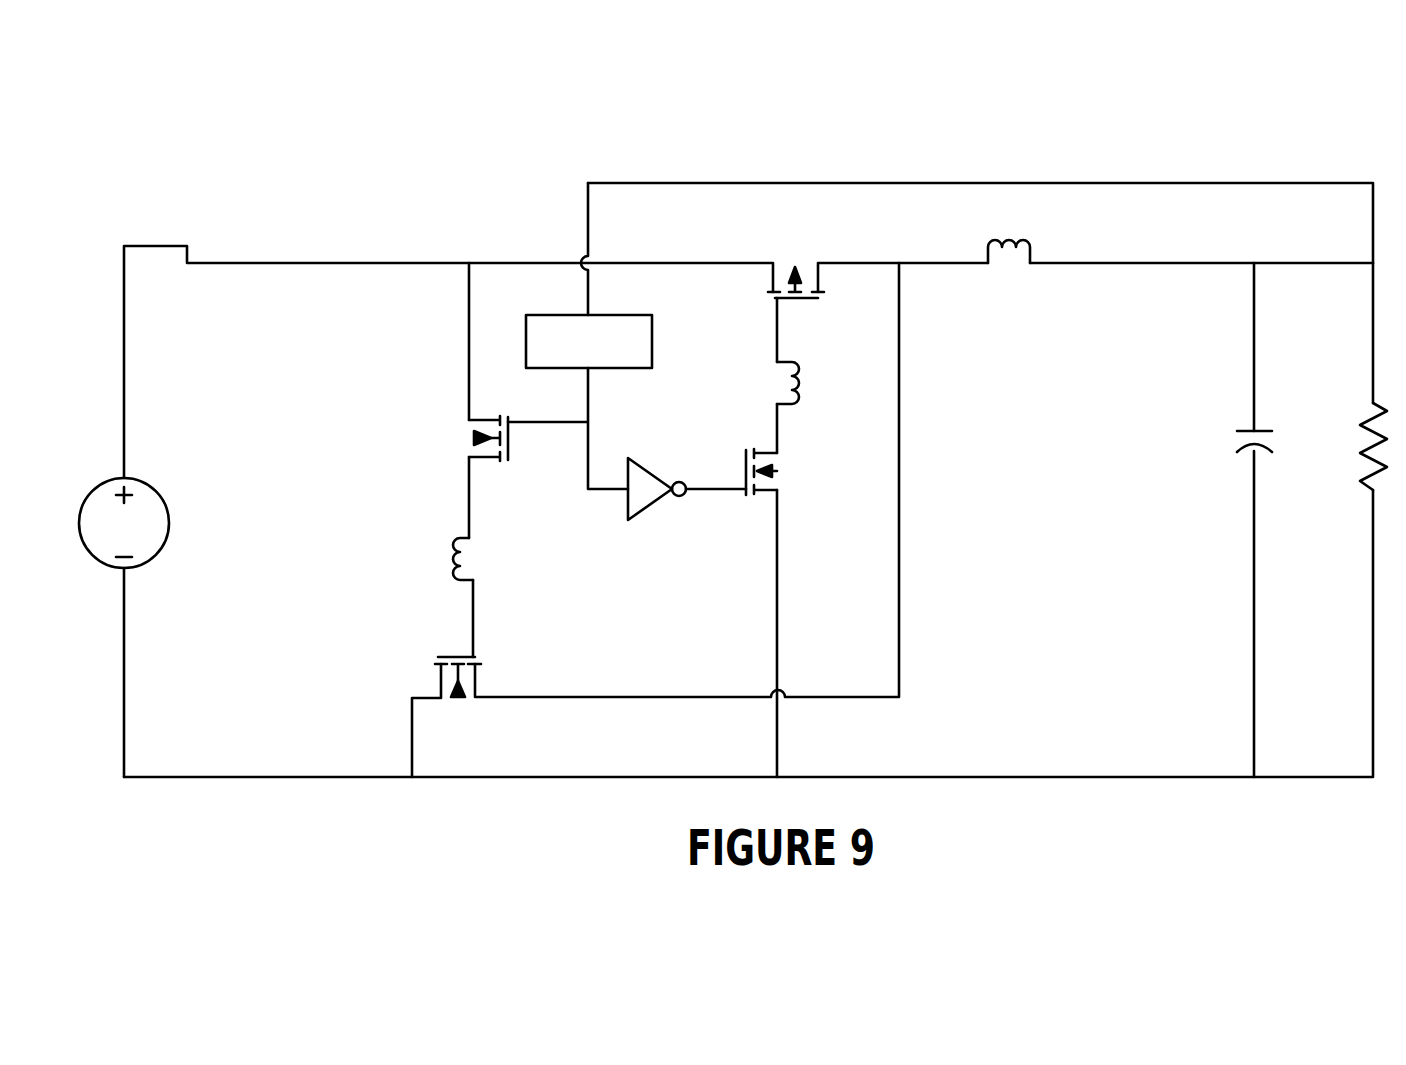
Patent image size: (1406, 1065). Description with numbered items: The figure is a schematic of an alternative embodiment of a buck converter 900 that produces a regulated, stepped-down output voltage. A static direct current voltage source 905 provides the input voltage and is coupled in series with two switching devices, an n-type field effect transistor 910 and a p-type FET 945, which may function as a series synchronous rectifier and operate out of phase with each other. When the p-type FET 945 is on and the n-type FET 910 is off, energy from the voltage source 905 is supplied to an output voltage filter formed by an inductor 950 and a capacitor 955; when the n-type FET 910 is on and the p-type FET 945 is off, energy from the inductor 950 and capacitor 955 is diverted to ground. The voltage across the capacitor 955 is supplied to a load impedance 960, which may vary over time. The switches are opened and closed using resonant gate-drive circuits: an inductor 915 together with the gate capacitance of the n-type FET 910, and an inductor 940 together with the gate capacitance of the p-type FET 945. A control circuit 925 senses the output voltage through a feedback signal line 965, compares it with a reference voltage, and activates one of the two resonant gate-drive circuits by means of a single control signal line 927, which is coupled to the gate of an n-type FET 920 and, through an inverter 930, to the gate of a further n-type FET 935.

The buck converter 900 is at (766, 138).
The static direct current voltage source 905 is at (171, 514).
The n-type field effect transistor 910 is at (460, 700).
The inductor 915 is at (447, 550).
The n-type FET 920 is at (470, 436).
The control circuit 925 is at (652, 338).
The control signal line 927 is at (588, 400).
The inverter 930 is at (645, 512).
The n-type FET 935 is at (766, 452).
The inductor 940 is at (798, 367).
The p-type FET 945 is at (795, 262).
The inductor 950 is at (1004, 237).
The capacitor 955 is at (1248, 430).
The load impedance 960 is at (1363, 450).
The feedback signal line 965 is at (958, 183).